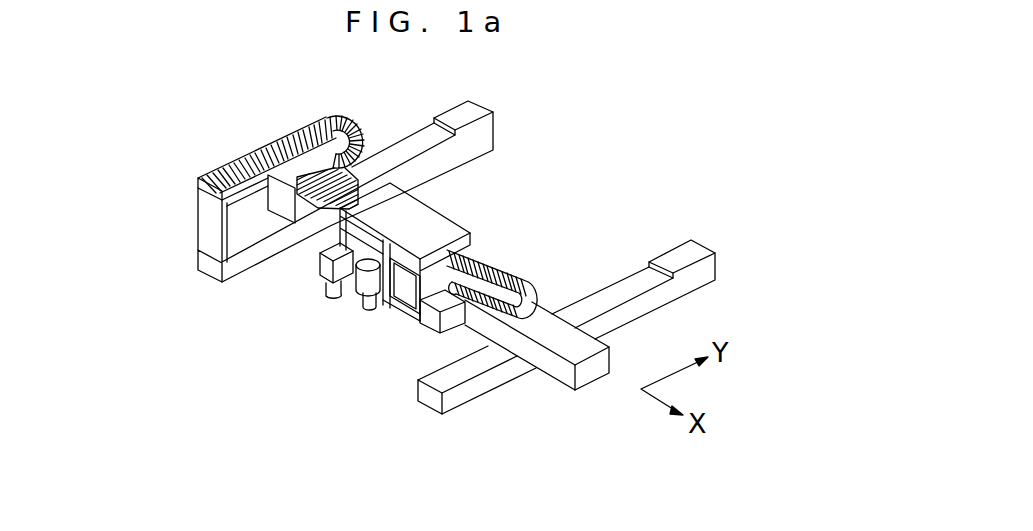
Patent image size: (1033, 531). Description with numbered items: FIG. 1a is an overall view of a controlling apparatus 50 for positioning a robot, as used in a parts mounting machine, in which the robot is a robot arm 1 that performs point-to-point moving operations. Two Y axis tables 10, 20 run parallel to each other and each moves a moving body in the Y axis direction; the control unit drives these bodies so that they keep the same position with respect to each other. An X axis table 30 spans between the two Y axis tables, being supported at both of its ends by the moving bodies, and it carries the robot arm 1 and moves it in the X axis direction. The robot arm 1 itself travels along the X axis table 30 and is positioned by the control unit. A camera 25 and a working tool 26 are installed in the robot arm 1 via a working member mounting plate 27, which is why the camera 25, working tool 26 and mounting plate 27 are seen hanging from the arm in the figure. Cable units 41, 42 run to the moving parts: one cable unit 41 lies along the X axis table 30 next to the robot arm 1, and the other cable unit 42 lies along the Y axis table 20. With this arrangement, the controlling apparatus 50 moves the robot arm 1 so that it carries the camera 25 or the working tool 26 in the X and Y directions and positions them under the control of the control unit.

The robot arm 1 is at (443, 228).
The Y axis table 10 is at (683, 296).
The Y axis table 20 is at (401, 137).
The camera 25 is at (330, 283).
The working tool 26 is at (366, 304).
The working member mounting plate 27 is at (383, 302).
The X axis table 30 is at (550, 308).
The cable unit 41 is at (483, 253).
The cable unit 42 is at (300, 134).
The controlling apparatus for positioning a robot 50 is at (655, 202).